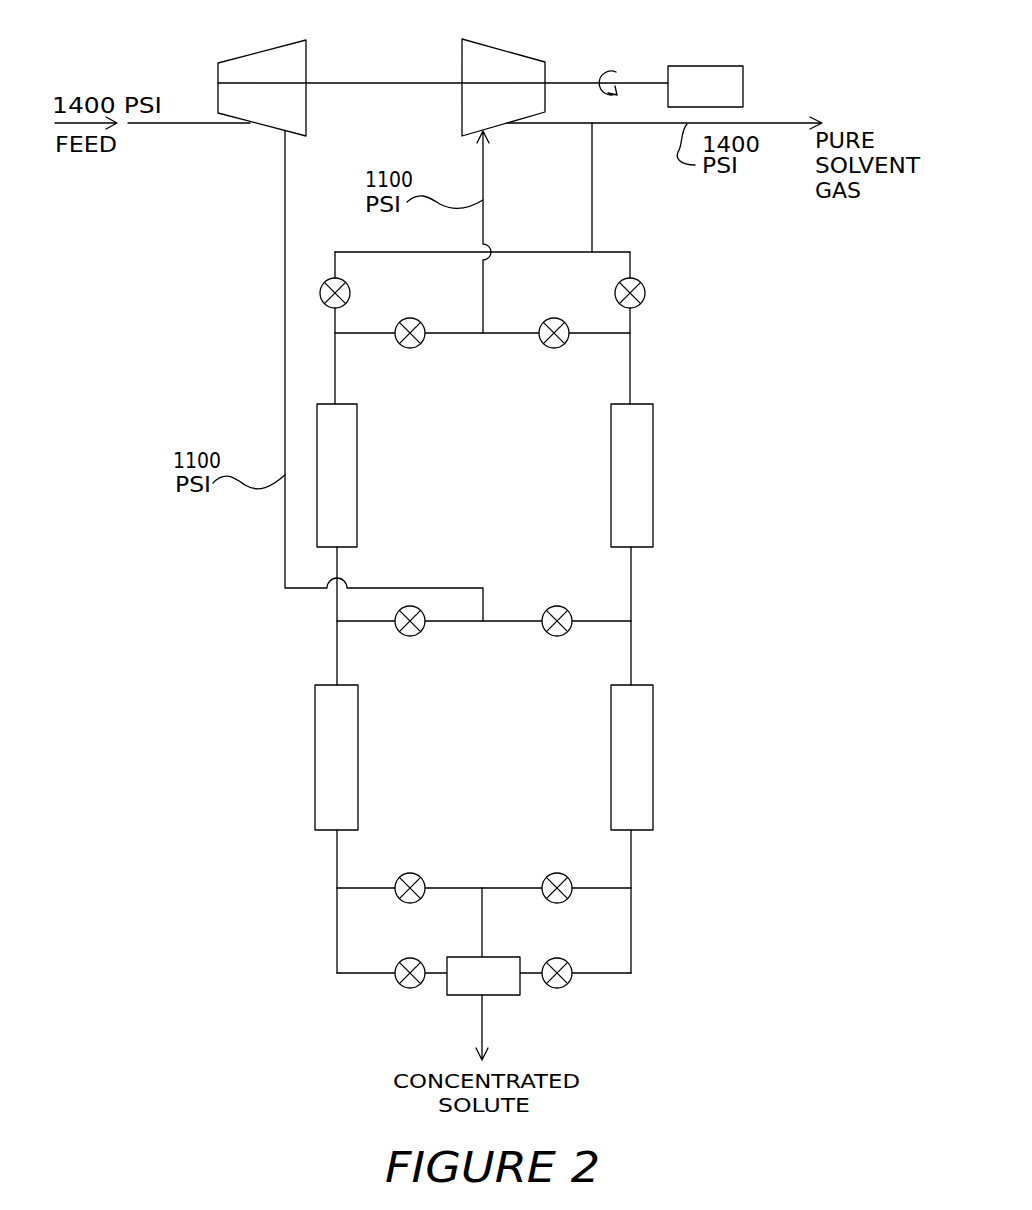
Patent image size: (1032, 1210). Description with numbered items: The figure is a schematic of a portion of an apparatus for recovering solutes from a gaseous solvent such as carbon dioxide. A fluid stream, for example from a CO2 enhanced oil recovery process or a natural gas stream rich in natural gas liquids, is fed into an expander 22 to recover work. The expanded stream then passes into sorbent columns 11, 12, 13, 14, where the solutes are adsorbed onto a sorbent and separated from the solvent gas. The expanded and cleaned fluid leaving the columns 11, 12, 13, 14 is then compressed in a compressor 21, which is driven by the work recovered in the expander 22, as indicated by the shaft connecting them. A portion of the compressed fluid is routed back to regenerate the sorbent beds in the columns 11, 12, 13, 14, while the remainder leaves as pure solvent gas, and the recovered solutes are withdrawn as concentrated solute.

The first extraction vessel 11 is at (348, 447).
The second extraction vessel 12 is at (646, 447).
The third extraction vessel 13 is at (350, 733).
The fourth extraction vessel 14 is at (646, 733).
The compressor 21 is at (531, 57).
The expander 22 is at (270, 49).